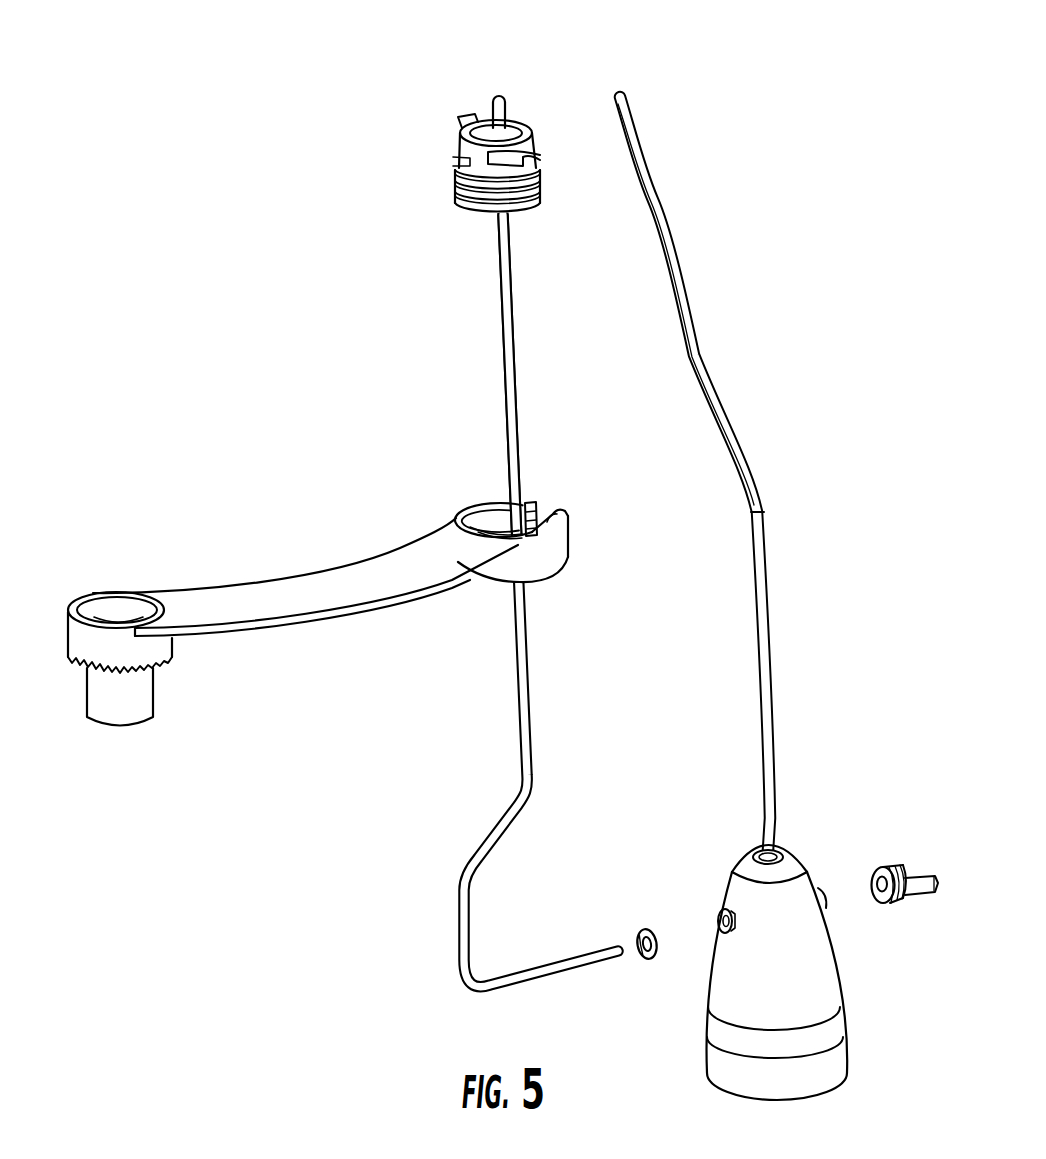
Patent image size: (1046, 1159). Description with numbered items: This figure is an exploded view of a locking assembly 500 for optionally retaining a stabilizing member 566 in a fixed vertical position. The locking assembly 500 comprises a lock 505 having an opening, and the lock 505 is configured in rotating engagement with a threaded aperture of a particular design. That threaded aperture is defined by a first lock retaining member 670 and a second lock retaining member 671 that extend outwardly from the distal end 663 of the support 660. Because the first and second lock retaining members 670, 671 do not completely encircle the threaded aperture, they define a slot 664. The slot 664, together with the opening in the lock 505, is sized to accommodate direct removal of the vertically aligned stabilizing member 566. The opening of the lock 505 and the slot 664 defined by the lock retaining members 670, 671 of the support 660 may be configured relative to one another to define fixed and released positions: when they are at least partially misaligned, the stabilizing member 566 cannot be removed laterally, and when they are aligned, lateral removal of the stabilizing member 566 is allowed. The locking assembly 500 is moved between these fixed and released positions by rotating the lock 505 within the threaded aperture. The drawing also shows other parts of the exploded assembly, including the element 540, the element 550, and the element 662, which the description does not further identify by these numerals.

The locking assembly 500 is at (338, 83).
The lock 505 is at (515, 92).
The cable 540 is at (759, 537).
The end cap 550 is at (828, 979).
The stabilizing member 566 is at (506, 328).
The support 660 is at (235, 595).
The socket 662 is at (92, 592).
The distal end 663 is at (525, 495).
The slot 664 is at (492, 503).
The first lock retaining member 670 is at (524, 500).
The second lock retaining member 671 is at (562, 553).